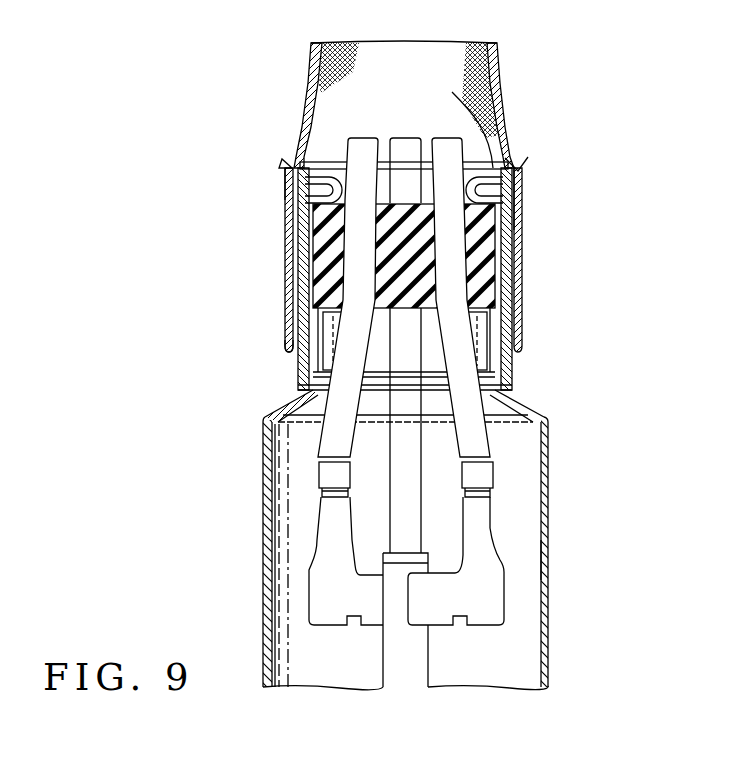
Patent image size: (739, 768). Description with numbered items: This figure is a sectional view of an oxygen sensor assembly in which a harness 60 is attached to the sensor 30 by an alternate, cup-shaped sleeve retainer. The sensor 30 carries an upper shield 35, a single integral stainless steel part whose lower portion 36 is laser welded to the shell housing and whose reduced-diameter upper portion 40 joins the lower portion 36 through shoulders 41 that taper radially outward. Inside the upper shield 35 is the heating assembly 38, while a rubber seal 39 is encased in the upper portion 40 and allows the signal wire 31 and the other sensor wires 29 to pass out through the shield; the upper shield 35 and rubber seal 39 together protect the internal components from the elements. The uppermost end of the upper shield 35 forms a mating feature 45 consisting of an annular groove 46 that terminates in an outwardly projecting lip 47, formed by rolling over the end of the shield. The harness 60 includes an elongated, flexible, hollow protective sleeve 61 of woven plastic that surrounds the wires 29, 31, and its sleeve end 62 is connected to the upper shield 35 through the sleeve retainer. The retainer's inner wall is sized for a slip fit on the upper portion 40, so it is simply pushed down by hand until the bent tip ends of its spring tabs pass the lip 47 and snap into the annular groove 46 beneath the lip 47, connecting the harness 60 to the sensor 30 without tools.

The sensor wires 29 is at (362, 146).
The signal wire 31 is at (405, 140).
The sensor 30 is at (553, 489).
The upper shield 35 is at (557, 561).
The lower portion 36 is at (548, 618).
The heating assembly 38 is at (411, 690).
The rubber seal 39 is at (489, 247).
The upper portion 40 is at (505, 362).
The shoulders 41 is at (526, 402).
The mating feature 45 is at (312, 184).
The annular groove 46 is at (317, 200).
The outwardly projecting lip 47 is at (330, 185).
The harness 60 is at (503, 68).
The protective sleeve 61 is at (308, 77).
The sleeve end 62 is at (517, 300).